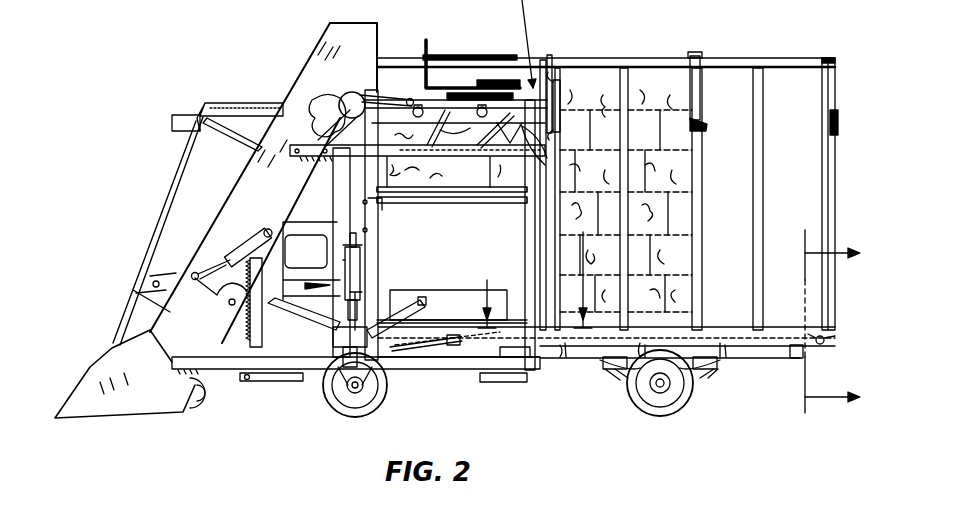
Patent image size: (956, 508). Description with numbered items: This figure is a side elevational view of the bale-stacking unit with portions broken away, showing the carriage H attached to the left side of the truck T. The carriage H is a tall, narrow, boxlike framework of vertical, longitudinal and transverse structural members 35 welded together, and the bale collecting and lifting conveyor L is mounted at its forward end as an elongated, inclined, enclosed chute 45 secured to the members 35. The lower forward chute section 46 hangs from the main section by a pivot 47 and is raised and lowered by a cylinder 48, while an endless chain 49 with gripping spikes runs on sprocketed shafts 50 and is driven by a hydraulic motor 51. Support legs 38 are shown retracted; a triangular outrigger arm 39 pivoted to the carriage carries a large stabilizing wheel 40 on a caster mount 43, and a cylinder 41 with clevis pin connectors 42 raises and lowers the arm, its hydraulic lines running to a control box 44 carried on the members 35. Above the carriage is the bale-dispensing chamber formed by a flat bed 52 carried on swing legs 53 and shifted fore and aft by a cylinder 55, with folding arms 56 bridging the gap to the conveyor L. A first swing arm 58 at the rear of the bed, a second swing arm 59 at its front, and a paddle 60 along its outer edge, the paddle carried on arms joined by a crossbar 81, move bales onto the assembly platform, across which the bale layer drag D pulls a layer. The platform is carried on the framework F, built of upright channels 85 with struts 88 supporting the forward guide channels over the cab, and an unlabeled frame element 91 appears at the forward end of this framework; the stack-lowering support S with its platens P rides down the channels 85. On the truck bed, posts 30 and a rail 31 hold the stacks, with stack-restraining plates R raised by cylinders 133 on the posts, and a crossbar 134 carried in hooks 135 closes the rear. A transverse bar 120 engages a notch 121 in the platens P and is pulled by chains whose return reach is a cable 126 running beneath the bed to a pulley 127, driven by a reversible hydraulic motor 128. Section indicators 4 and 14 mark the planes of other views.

The section line 4 is at (539, 280).
The section line 14 is at (836, 316).
The posts 30 is at (628, 83).
The rail 31 is at (720, 60).
The structural members 35 is at (348, 203).
The support legs 38 is at (277, 383).
The outrigger arm 39 is at (292, 318).
The stabilizing wheel 40 is at (370, 413).
The cylinder 41 is at (347, 282).
The clevis pin connectors 42 is at (377, 283).
The caster mount 43 is at (325, 390).
The control box 44 is at (463, 293).
The chute 45 is at (255, 168).
The forward chute section 46 is at (105, 372).
The pivot 47 is at (229, 303).
The cylinder 48 is at (281, 207).
The endless chain 49 is at (318, 58).
The sprocketed shafts 50 is at (190, 394).
The hydraulic motor 51 is at (343, 102).
The bed 52 is at (580, 137).
The swing legs 53 is at (480, 182).
The cylinder 55 is at (558, 157).
The folding arms 56 is at (383, 92).
The first swing arm 58 is at (541, 53).
The second swing arm 59 is at (417, 37).
The paddle 60 is at (477, 90).
The crossbar 81 is at (262, 103).
The upright channels 85 is at (378, 293).
The struts 88 is at (212, 135).
The frame end block 91 is at (172, 126).
The bar 120 is at (452, 293).
The notch 121 is at (380, 198).
The cable 126 is at (790, 357).
The pulley 127 is at (410, 337).
The reversible hydraulic motor 128 is at (848, 343).
The cylinder 133 is at (703, 84).
The crossbar 134 is at (838, 113).
The hooks 135 is at (838, 135).
The bale layer drag D is at (503, 53).
The framework F is at (222, 100).
The carriage H is at (418, 370).
The bale collecting and lifting conveyor L is at (252, 225).
The platens P is at (517, 200).
The stack-restraining plates R is at (558, 57).
The stack-lowering support S is at (377, 207).
The truck T is at (160, 298).